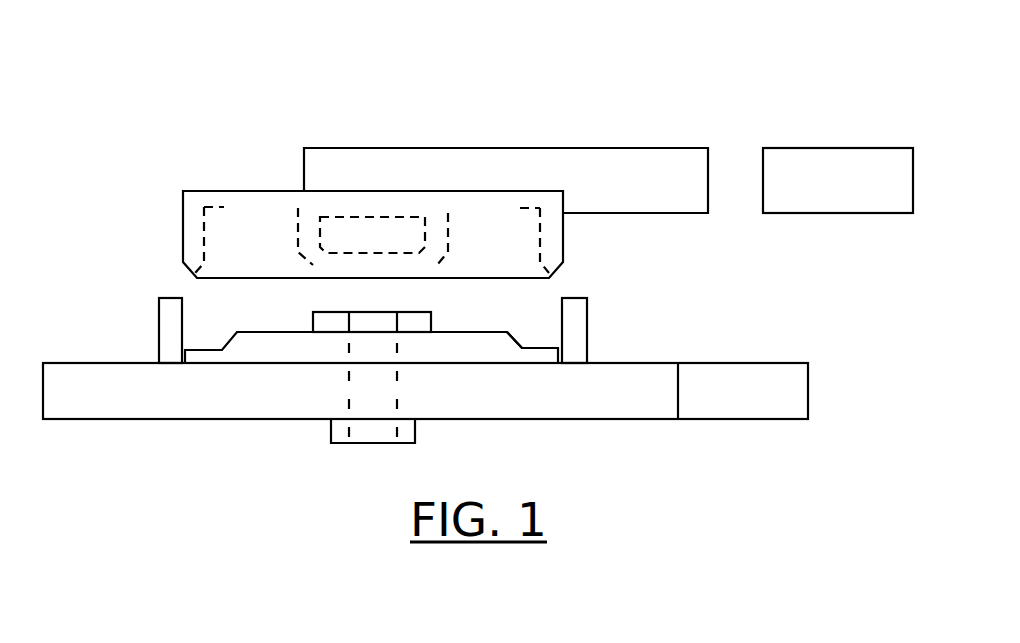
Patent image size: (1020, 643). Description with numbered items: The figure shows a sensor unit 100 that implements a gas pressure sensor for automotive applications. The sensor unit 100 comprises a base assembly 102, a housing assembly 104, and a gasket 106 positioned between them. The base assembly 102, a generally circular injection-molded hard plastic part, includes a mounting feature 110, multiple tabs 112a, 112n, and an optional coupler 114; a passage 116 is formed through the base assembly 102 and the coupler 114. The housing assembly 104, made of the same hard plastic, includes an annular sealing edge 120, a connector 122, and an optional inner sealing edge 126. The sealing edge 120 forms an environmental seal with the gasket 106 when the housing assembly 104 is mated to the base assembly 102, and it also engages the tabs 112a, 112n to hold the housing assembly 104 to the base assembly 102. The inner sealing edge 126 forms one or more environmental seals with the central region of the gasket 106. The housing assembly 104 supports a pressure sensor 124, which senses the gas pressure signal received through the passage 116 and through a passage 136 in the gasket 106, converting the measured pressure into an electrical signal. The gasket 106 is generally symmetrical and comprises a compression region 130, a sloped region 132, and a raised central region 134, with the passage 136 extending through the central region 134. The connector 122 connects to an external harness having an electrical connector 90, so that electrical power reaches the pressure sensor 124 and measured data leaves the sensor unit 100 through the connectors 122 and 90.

The sensor unit 100 is at (378, 45).
The base assembly 102 is at (87, 363).
The housing assembly 104 is at (240, 191).
The gasket 106 is at (265, 332).
The mounting feature 110 is at (748, 363).
The tab 112a is at (167, 298).
The tab 112n is at (575, 298).
The coupler 114 is at (331, 428).
The passage 116 is at (349, 387).
The annular sealing edge 120 is at (203, 240).
The connector 122 is at (470, 148).
The pressure sensor 124 is at (391, 246).
The inner sealing edge 126 is at (298, 208).
The compression region 130 is at (558, 367).
The sloped region 132 is at (522, 343).
The central region 134 is at (408, 312).
The passage 136 is at (349, 343).
The electrical connector 90 is at (845, 148).